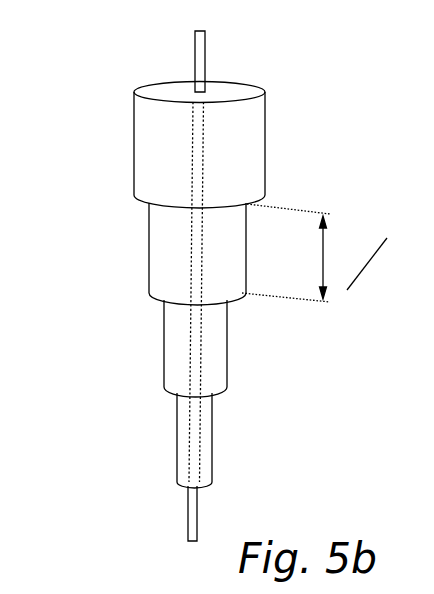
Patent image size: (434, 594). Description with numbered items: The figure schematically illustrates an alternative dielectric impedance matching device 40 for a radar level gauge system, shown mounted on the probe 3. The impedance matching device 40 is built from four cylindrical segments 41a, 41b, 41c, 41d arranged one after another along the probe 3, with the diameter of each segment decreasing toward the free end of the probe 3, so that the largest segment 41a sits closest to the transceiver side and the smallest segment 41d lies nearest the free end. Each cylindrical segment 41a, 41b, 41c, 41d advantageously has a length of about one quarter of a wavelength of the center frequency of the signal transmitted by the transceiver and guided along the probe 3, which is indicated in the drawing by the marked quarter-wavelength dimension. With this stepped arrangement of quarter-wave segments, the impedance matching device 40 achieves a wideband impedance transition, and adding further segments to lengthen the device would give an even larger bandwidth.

The probe 3 is at (202, 57).
The dielectric impedance matching device 40 is at (312, 95).
The cylindrical segment 41a is at (148, 144).
The cylindrical segment 41b is at (163, 247).
The cylindrical segment 41c is at (173, 347).
The cylindrical segment 41d is at (182, 438).